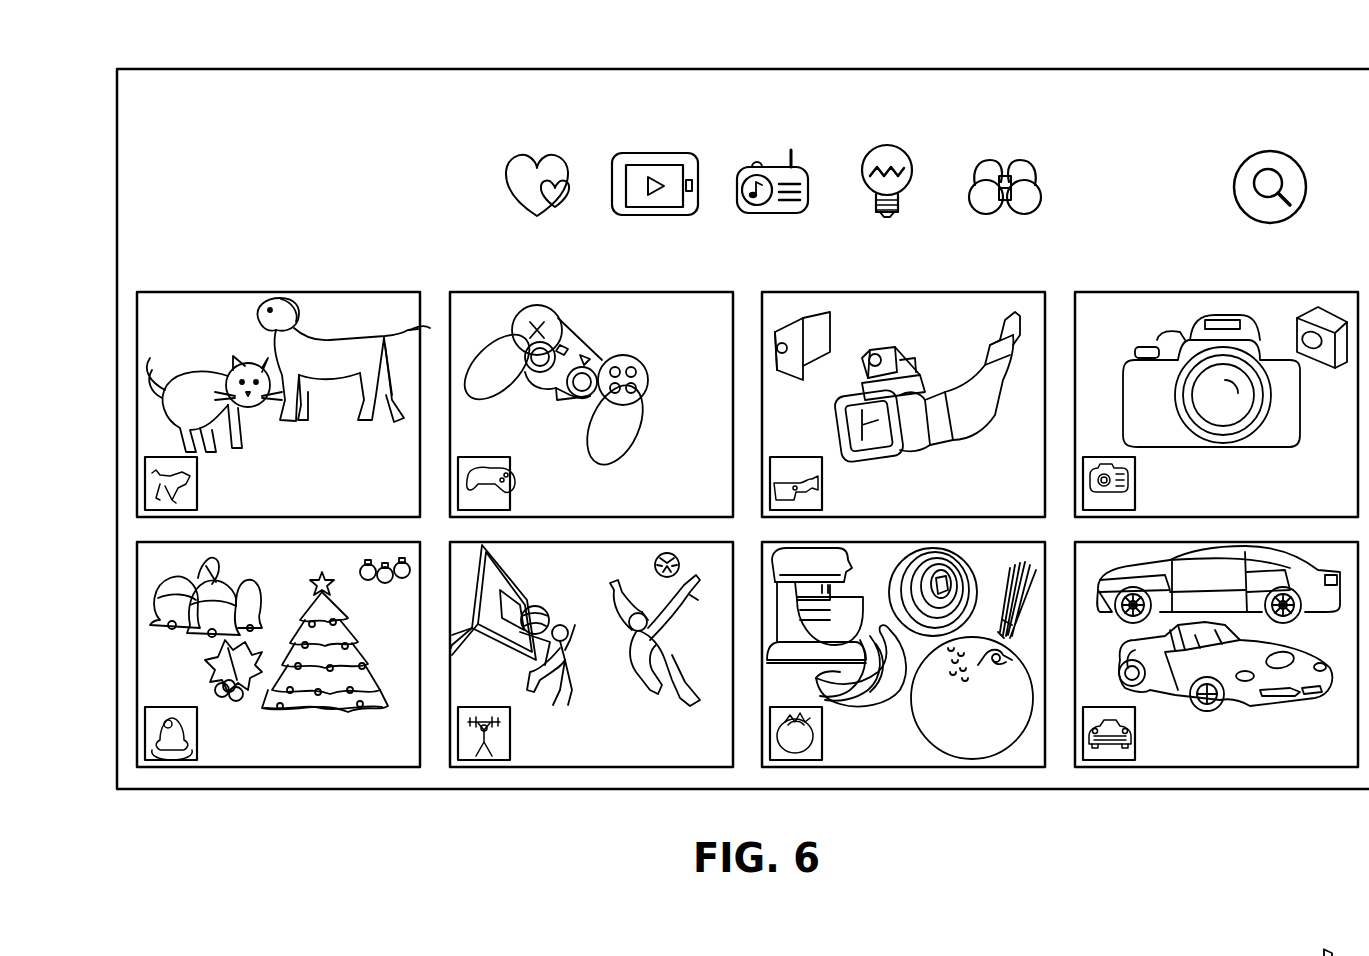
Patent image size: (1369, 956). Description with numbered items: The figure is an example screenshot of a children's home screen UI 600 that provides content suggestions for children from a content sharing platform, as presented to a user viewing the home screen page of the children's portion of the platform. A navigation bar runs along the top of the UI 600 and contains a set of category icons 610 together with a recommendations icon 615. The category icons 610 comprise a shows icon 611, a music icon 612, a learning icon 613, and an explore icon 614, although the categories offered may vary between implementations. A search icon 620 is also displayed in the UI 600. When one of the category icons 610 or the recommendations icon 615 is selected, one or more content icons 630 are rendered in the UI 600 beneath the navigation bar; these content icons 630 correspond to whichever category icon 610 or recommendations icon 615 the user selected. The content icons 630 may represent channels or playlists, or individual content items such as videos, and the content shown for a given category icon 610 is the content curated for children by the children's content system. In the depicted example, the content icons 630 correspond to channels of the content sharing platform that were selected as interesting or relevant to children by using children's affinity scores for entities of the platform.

The children's home screen UI 600 is at (332, 36).
The category icons 610 is at (1068, 160).
The shows icon 611 is at (640, 252).
The music icon 612 is at (775, 218).
The learning icon 613 is at (882, 216).
The explore icon 614 is at (995, 218).
The recommendations icon 615 is at (533, 220).
The search icon 620 is at (1297, 153).
The content icons 630 is at (105, 262).